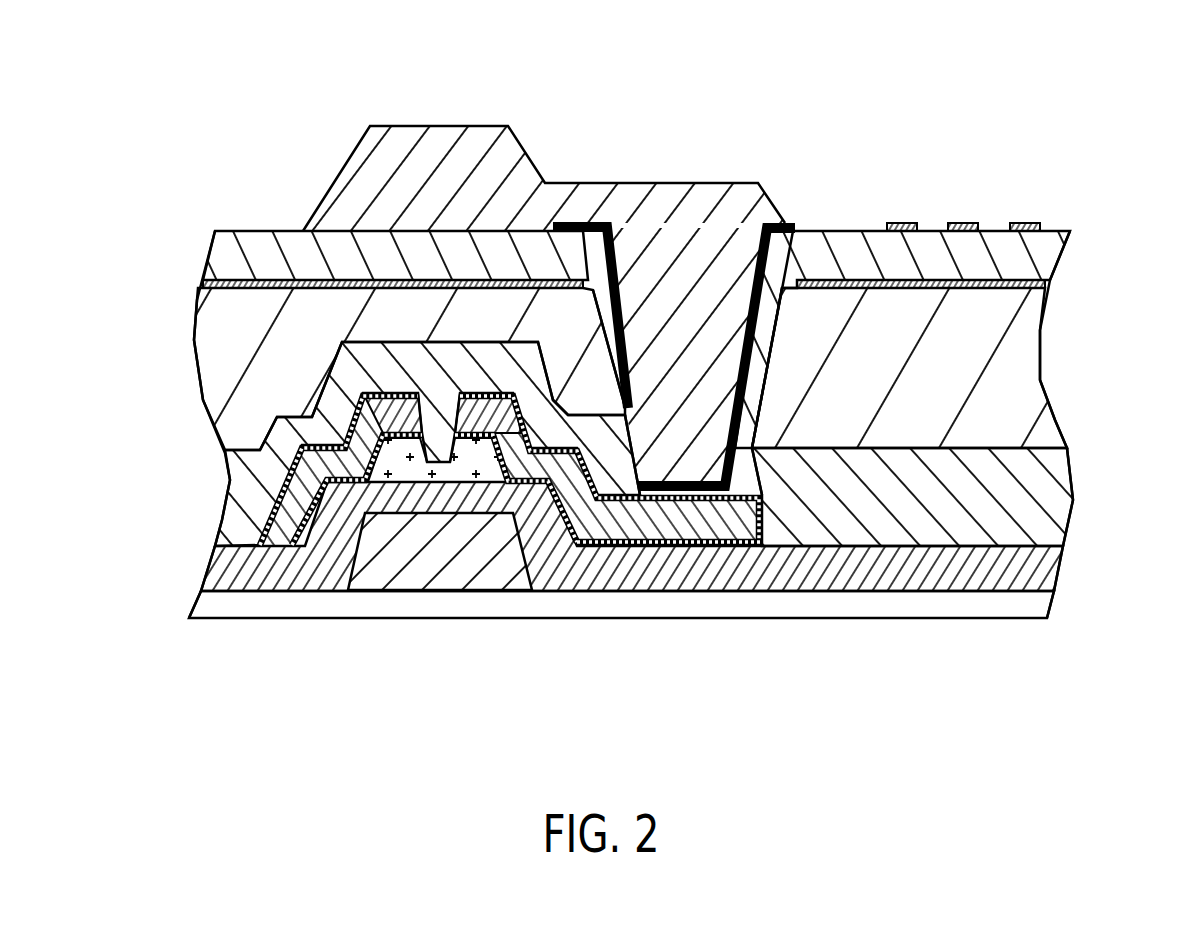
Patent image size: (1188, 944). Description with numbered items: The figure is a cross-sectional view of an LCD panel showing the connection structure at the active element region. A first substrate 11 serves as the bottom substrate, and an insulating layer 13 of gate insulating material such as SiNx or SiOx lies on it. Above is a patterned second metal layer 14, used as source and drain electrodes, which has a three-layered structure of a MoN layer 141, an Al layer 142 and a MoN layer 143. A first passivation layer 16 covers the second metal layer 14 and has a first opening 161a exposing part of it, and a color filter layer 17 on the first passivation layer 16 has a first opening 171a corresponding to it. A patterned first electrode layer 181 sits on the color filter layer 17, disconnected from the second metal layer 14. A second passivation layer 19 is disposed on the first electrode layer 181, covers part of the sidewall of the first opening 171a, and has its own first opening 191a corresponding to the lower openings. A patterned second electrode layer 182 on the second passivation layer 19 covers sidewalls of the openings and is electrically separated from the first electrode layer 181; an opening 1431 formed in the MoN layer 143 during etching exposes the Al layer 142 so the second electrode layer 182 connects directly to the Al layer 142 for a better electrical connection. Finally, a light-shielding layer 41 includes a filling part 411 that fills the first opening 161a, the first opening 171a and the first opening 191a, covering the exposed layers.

The first substrate 11 is at (1043, 605).
The insulating layer 13 is at (1047, 566).
The second metal layer 14 is at (592, 559).
The MoN layer 141 is at (670, 497).
The Al layer 142 is at (765, 523).
The MoN layer 143 is at (608, 553).
The opening 1431 is at (638, 496).
The first passivation layer 16 is at (1057, 488).
The first opening 161a is at (660, 478).
The color filter layer 17 is at (1023, 358).
The first opening 171a is at (780, 337).
The first electrode layer 181 is at (1045, 287).
The second electrode layer 182 is at (1040, 225).
The second passivation layer 19 is at (1043, 257).
The first opening 191a is at (752, 277).
The light-shielding layer 41 is at (544, 261).
The filling part 411 is at (673, 220).